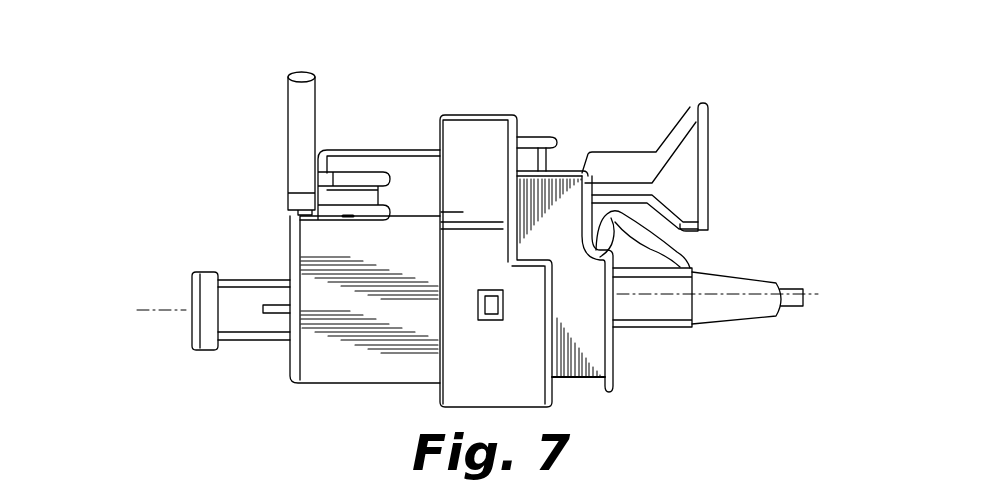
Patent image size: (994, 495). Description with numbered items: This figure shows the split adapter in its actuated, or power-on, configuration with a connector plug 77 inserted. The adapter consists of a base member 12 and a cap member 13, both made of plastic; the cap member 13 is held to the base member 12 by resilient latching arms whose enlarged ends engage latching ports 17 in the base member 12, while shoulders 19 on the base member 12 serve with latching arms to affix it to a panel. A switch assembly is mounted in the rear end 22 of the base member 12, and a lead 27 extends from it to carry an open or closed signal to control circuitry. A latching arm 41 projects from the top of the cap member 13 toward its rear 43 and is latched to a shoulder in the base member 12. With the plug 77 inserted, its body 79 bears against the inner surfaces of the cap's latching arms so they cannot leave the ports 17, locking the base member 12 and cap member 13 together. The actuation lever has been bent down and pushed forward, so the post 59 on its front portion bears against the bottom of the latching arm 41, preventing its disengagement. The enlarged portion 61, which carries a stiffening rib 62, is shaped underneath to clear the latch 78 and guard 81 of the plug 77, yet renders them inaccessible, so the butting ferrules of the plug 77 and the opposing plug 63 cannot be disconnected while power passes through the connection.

The base member 12 is at (375, 370).
The cap member 13 is at (590, 378).
The latching ports 17 is at (487, 310).
The shoulders 19 is at (440, 116).
The rear end 22 is at (287, 368).
The lead 27 is at (293, 120).
The latching arm 41 is at (542, 133).
The rear 43 is at (614, 378).
The post 59 is at (542, 162).
The enlarged portion 61 is at (706, 103).
The stiffening rib 62 is at (636, 150).
The plug 63 is at (205, 347).
The connector plug 77 is at (710, 346).
The latching arm 78 is at (608, 241).
The body 79 is at (670, 311).
The guard 81 is at (643, 228).